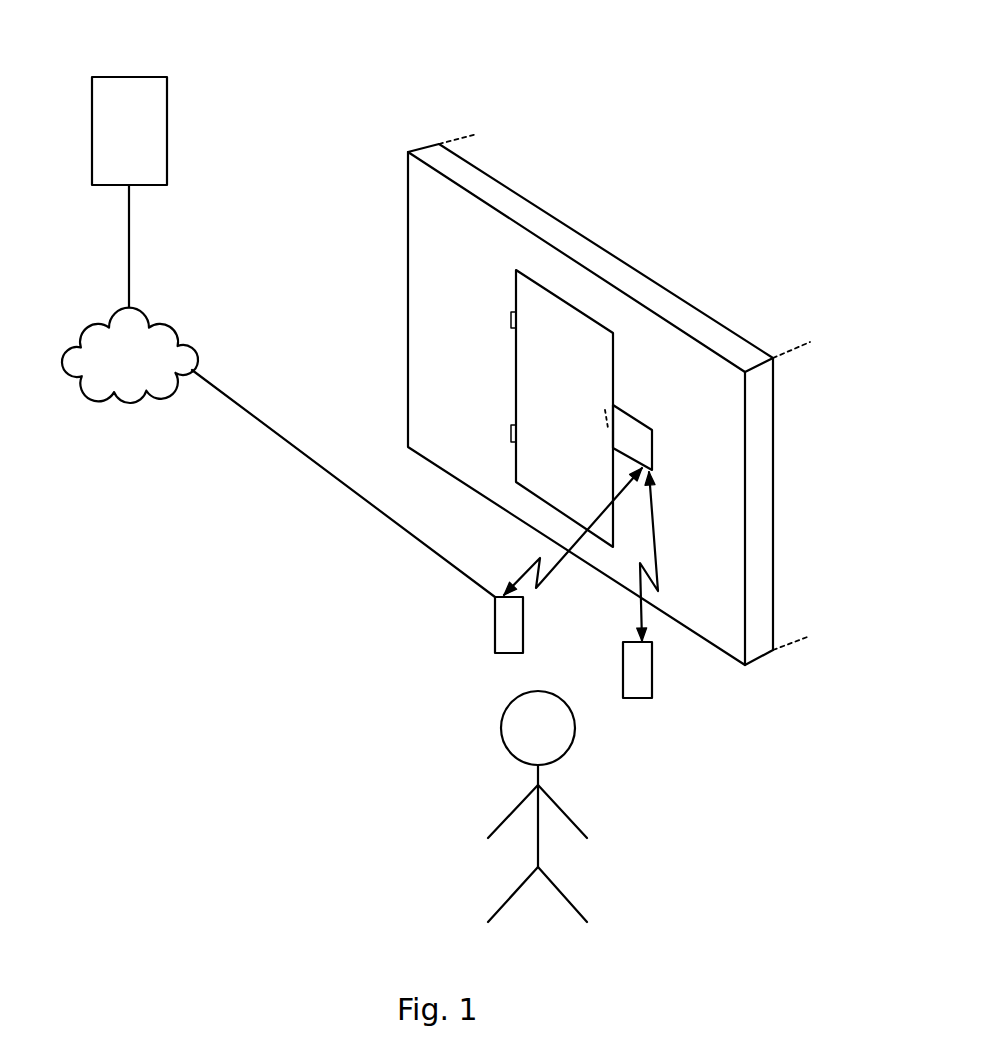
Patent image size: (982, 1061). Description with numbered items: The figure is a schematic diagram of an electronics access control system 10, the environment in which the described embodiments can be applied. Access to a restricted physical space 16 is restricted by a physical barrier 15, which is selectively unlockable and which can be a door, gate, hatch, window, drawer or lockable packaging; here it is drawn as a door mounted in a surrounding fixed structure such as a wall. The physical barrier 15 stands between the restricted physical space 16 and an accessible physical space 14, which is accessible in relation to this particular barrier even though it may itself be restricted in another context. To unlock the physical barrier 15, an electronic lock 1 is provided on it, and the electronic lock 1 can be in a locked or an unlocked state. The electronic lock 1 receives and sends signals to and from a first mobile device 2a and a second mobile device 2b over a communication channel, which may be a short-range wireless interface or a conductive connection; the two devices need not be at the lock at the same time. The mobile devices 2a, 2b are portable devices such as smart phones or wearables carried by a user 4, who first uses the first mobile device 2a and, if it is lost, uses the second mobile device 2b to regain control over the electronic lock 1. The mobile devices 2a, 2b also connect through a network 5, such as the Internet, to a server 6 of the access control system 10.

The electronics access control system 10 is at (708, 67).
The electronic lock 1 is at (653, 430).
The first mobile device 2a is at (495, 613).
The second mobile device 2b is at (623, 657).
The user 4 is at (505, 747).
The network 5 is at (136, 371).
The server 6 is at (136, 111).
The accessible physical space 14 is at (352, 296).
The physical barrier 15 is at (573, 401).
The restricted physical space 16 is at (738, 262).